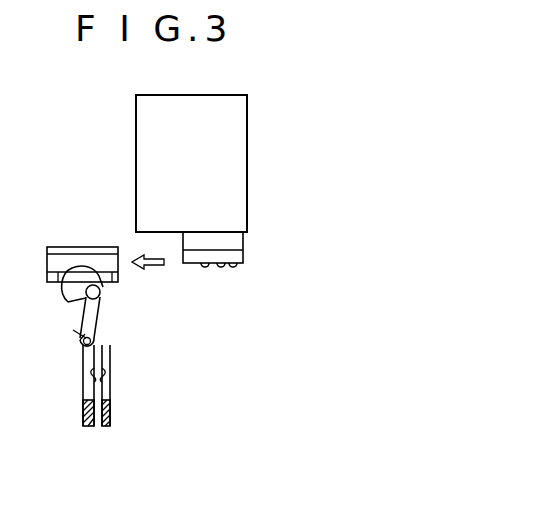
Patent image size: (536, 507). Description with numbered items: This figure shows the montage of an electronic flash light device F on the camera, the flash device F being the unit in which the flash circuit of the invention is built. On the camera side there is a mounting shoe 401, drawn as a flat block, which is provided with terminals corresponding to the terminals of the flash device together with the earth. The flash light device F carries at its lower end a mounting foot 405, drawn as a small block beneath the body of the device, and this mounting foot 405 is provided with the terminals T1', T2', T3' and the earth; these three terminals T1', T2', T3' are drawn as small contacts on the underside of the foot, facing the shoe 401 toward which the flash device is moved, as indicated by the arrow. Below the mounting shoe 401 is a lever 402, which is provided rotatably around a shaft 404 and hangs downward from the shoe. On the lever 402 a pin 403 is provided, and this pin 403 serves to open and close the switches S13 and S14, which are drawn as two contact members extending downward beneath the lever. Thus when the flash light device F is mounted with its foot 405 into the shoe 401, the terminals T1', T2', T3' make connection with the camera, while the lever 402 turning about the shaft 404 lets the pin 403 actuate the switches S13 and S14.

The electronic flash light device F is at (247, 117).
The mounting foot 405 is at (237, 252).
The terminal T1' is at (205, 290).
The terminal T2' is at (227, 290).
The terminal T3' is at (249, 290).
The mounting shoe 401 is at (75, 248).
The lever 402 is at (68, 297).
The pin 403 is at (98, 341).
The shaft 404 is at (101, 293).
The switch S13 is at (88, 428).
The switch S14 is at (106, 428).